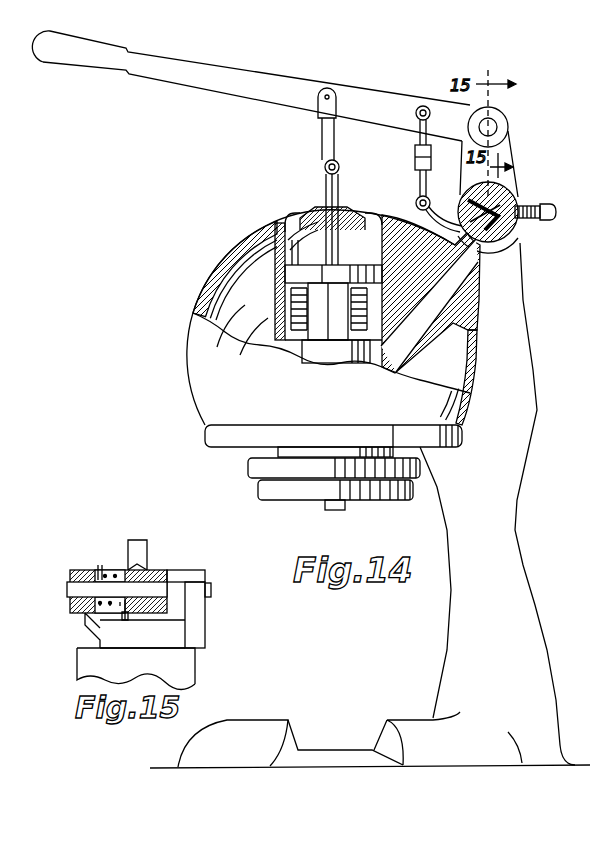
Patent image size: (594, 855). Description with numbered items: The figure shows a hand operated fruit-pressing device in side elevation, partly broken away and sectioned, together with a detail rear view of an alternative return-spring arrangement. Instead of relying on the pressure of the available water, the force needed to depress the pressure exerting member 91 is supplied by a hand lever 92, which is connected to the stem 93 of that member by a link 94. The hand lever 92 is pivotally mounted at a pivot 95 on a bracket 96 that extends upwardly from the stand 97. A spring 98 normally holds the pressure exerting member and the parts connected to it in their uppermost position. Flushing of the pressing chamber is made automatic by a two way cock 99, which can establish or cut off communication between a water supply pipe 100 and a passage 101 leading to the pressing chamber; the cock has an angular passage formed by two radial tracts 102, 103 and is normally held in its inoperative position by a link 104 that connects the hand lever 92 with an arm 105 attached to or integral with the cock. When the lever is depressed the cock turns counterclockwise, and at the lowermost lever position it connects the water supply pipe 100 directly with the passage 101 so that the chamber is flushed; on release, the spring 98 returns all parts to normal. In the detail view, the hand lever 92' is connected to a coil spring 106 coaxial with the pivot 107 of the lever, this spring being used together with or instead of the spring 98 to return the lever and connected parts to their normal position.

In FIG. 14, the pressure exerting member 91 is at (307, 357).
In FIG. 14, the hand lever 92 is at (251, 86).
In FIG. 15, the hand lever 92' is at (159, 553).
In FIG. 14, the stem 93 is at (340, 188).
In FIG. 14, the link 94 is at (334, 146).
In FIG. 14, the pivot 95 is at (497, 127).
In FIG. 14, the bracket 96 is at (512, 172).
In FIG. 14, the stand 97 is at (517, 470).
In FIG. 14, the spring 98 is at (372, 366).
In FIG. 14, the two way cock 99 is at (520, 238).
In FIG. 14, the water supply pipe 100 is at (540, 214).
In FIG. 14, the passage 101 is at (477, 277).
In FIG. 14, the radial tract 102 is at (513, 192).
In FIG. 14, the radial tract 103 is at (458, 232).
In FIG. 14, the link 104 is at (417, 157).
In FIG. 14, the arm 105 is at (439, 205).
In FIG. 15, the coil spring 106 is at (117, 570).
In FIG. 15, the pivot 107 is at (66, 588).